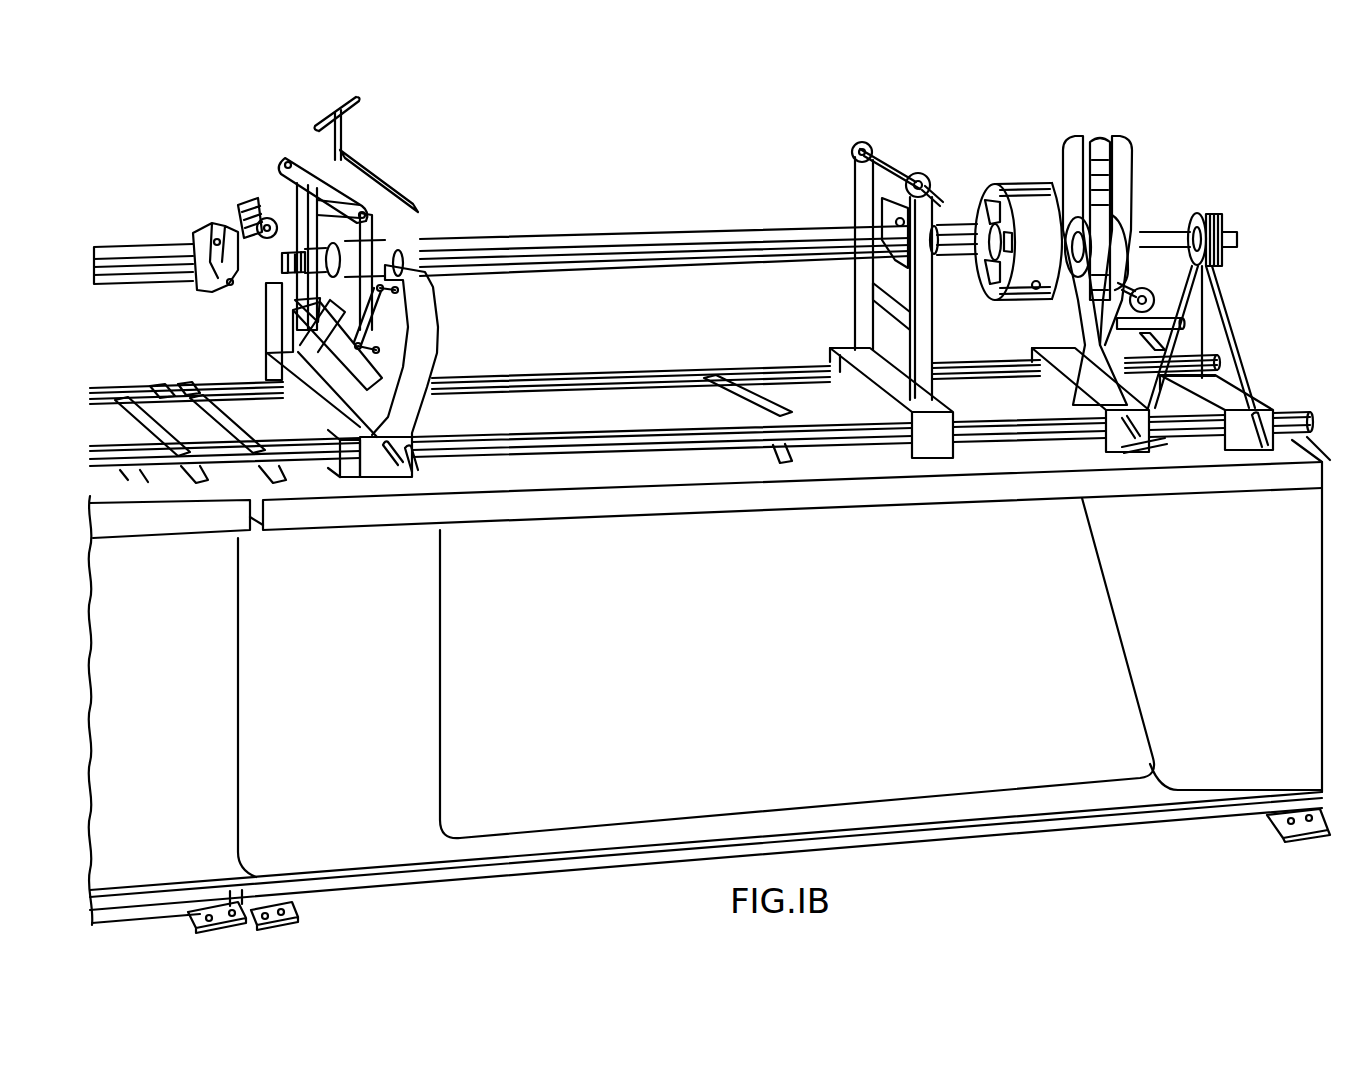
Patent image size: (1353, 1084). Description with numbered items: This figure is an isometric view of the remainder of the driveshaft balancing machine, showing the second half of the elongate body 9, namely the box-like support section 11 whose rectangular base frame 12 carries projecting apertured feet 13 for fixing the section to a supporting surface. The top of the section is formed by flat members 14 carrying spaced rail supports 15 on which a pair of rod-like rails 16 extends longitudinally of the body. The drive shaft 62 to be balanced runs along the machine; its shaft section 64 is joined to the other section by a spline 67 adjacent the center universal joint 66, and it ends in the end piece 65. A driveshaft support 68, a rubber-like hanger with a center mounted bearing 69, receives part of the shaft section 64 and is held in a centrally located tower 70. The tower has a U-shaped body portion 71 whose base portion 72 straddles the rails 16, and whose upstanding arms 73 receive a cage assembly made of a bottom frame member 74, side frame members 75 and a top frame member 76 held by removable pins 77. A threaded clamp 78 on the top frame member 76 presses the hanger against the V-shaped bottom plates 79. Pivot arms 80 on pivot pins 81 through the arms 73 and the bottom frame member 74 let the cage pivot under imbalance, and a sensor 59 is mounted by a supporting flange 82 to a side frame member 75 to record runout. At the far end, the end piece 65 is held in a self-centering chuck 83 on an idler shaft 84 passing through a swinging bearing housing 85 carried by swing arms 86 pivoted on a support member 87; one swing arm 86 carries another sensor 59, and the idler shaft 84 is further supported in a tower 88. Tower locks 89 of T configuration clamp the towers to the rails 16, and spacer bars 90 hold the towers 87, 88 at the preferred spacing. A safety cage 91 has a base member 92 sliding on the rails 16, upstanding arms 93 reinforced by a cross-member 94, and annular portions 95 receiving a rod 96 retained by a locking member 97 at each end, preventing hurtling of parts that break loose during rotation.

The elongate body 9 is at (638, 212).
The support section 11 is at (727, 733).
The rectangular base frame 12 is at (137, 895).
The projecting feet 13 is at (217, 896).
The flat members 14 is at (148, 501).
The rail supports 15 is at (182, 386).
The rails 16 is at (640, 388).
The sensor 59 is at (245, 211).
The drive shaft 62 is at (567, 233).
The shaft section 64 is at (688, 236).
The end piece 65 is at (967, 256).
The universal joints 66 is at (205, 236).
The spline 67 is at (300, 310).
The driveshaft support 68 is at (402, 268).
The center mounted bearing 69 is at (346, 268).
The tower 70 is at (372, 149).
The body portion 71 is at (338, 448).
The base portion 72 is at (377, 465).
The upstanding arms 73 is at (428, 344).
The bottom frame member 74 is at (322, 402).
The side frame members 75 is at (283, 176).
The top frame member 76 is at (382, 183).
The removable pins 77 is at (289, 160).
The threaded clamp 78 is at (358, 98).
The bottom plates 79 is at (330, 303).
The pivot arms 80 is at (403, 325).
The pivot pins 81 is at (428, 288).
The supporting flange 82 is at (291, 238).
The self-centering chuck 83 is at (1031, 188).
The idler shaft 84 is at (1175, 226).
The swinging bearing housing 85 is at (1116, 216).
The swing arms 86 is at (1070, 165).
The support member 87 is at (1103, 143).
The tower 88 is at (1222, 225).
The tower locks 89 is at (410, 463).
The spacer bars 90 is at (1190, 321).
The safety cage 91 is at (895, 140).
The base member 92 is at (940, 446).
The upstanding arms 93 is at (856, 202).
The cross-member 94 is at (872, 306).
The annular portions 95 is at (860, 143).
The rod 96 is at (885, 168).
The locking member 97 is at (937, 194).